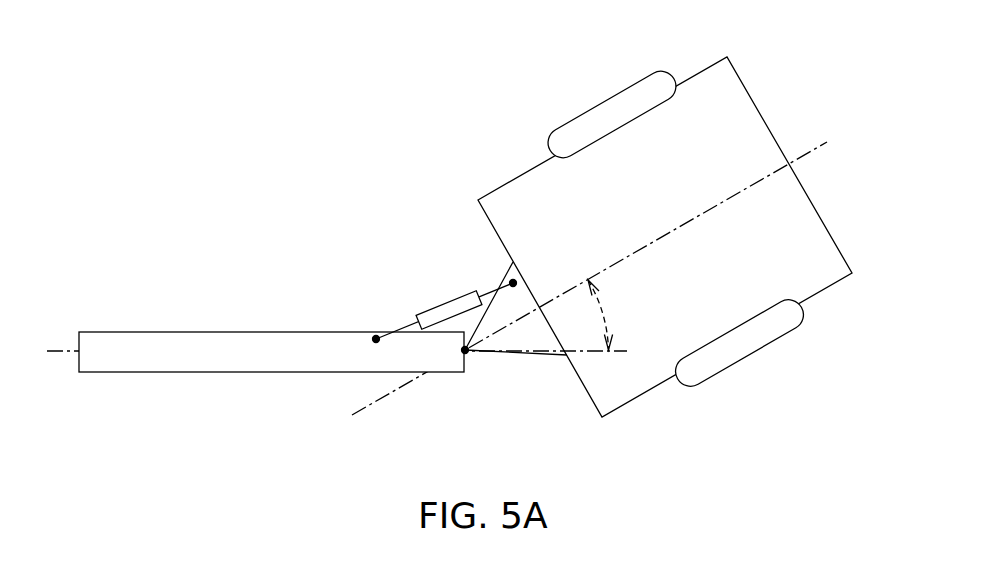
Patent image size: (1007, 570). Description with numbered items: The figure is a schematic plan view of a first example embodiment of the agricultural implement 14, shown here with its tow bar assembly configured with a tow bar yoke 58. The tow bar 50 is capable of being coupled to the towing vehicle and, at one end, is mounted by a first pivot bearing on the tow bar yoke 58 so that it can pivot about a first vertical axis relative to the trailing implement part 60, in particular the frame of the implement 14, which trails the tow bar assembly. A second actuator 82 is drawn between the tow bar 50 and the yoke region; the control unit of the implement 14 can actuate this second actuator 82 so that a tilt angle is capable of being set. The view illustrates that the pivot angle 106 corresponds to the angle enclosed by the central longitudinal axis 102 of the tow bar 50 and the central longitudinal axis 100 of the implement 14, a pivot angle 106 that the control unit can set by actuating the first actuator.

The implement 14 is at (425, 93).
The tow bar 50 is at (198, 332).
The tow bar yoke 58 is at (531, 337).
The implement part 60 is at (733, 132).
The second actuator 82 is at (447, 300).
The central longitudinal axis of the implement 100 is at (658, 237).
The central longitudinal axis of the tow bar 102 is at (285, 352).
The pivot angle 106 is at (603, 312).